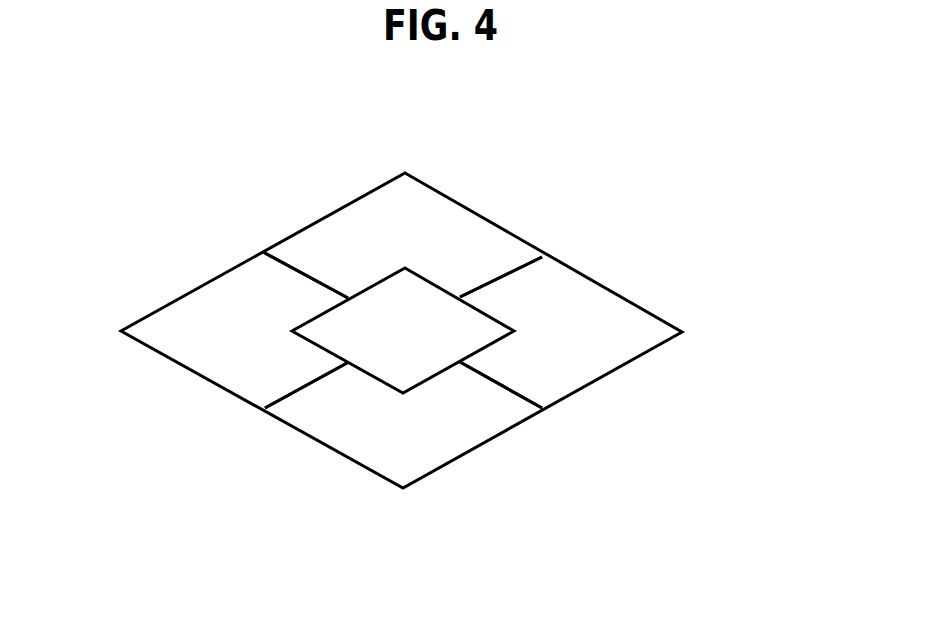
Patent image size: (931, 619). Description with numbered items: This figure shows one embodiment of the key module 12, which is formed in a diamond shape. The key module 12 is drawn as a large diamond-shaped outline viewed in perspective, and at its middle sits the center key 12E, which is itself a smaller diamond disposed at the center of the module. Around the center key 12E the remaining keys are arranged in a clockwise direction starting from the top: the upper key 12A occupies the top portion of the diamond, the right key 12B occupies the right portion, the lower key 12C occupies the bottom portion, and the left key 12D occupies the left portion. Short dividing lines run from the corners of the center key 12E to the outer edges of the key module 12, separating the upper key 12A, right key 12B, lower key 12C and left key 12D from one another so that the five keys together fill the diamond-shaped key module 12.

The key module 12 is at (585, 180).
The upper key 12A is at (407, 192).
The right key 12B is at (557, 282).
The lower key 12C is at (430, 453).
The left key 12D is at (210, 293).
The center key 12E is at (483, 330).